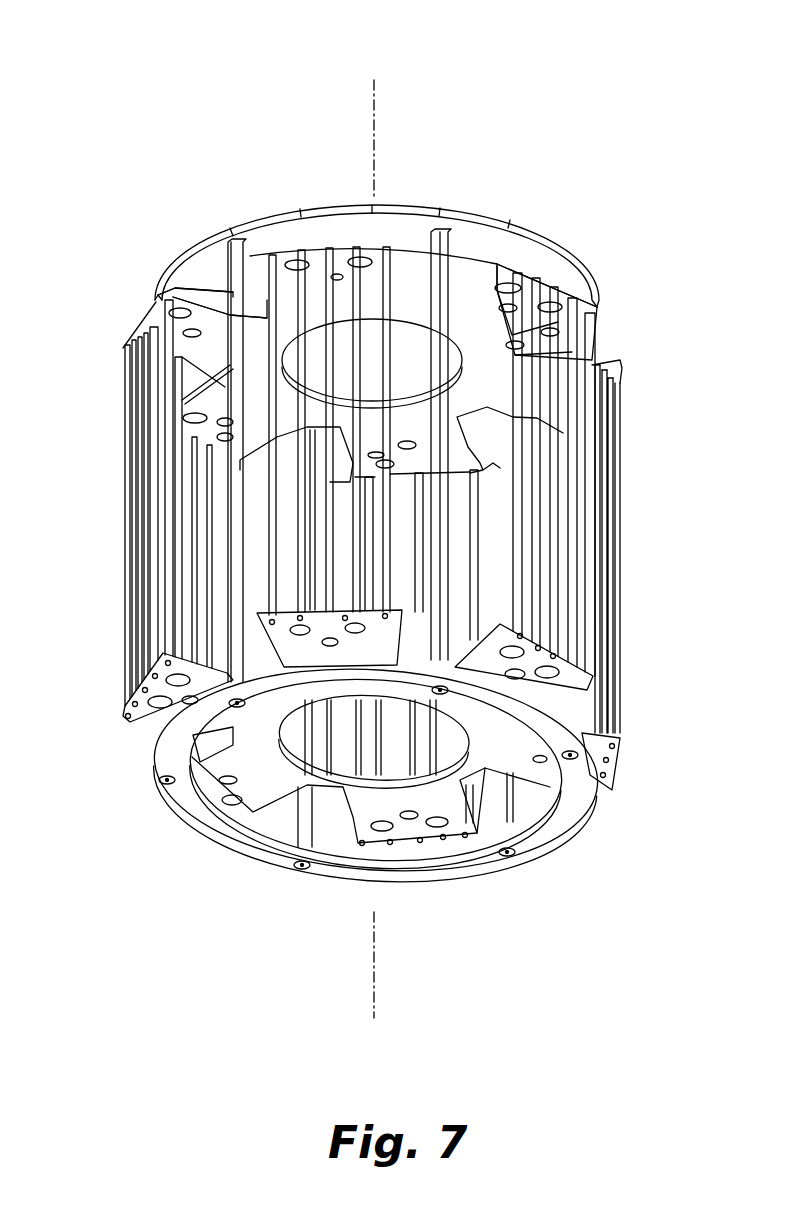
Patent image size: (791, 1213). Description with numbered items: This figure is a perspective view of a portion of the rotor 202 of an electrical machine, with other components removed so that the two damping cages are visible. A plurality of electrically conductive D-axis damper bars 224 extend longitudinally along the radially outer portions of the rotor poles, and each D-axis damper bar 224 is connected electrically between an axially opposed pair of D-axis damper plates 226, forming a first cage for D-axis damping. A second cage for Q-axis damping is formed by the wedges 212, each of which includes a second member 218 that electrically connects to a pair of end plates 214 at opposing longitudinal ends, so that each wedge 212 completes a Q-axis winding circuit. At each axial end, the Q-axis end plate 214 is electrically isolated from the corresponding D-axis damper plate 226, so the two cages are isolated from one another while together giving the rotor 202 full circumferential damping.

The rotor 202 is at (96, 165).
The wedge 212 is at (399, 556).
The second member 218 is at (232, 288).
The end plate 214 is at (548, 262).
The D-axis damper bar 224 is at (386, 284).
The D-axis damper plate 226 is at (493, 305).